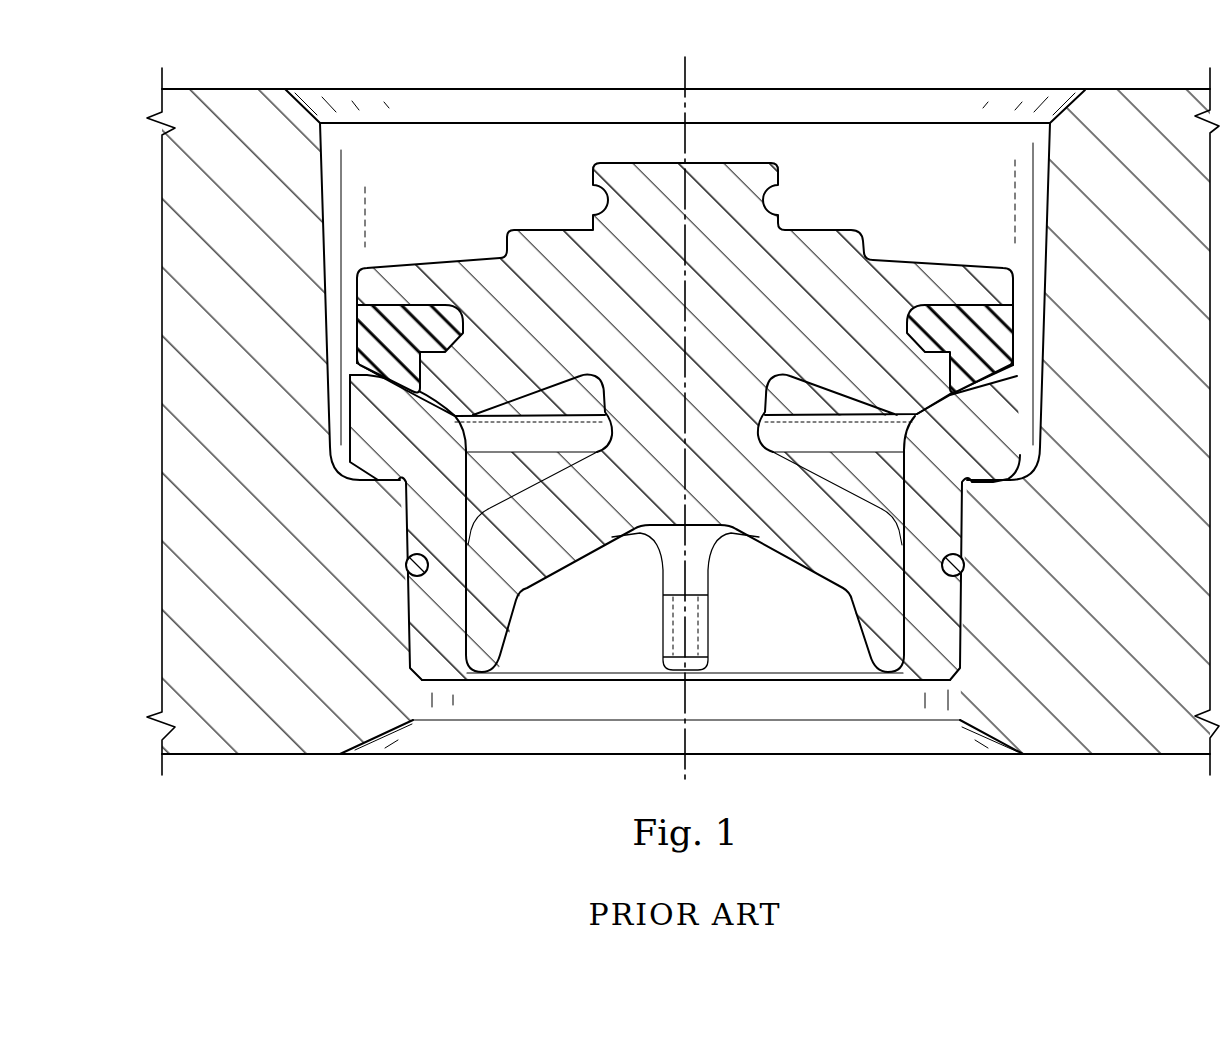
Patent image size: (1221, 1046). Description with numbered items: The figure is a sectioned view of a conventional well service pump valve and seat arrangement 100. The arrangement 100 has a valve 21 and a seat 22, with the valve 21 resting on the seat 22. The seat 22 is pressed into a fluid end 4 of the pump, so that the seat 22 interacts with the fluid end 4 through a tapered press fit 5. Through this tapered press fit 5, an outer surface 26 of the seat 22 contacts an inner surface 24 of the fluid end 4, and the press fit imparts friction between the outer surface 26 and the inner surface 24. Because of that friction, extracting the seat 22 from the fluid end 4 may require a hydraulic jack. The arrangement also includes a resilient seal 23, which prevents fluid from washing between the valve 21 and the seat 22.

The valve and seat arrangement 100 is at (727, 340).
The fluid end 4 is at (1158, 100).
The valve 21 is at (818, 237).
The seat 22 is at (912, 487).
The resilient seal 23 is at (1003, 323).
The inner surface 24 is at (960, 494).
The outer surface 26 is at (405, 590).
The tapered press fit 5 is at (970, 593).